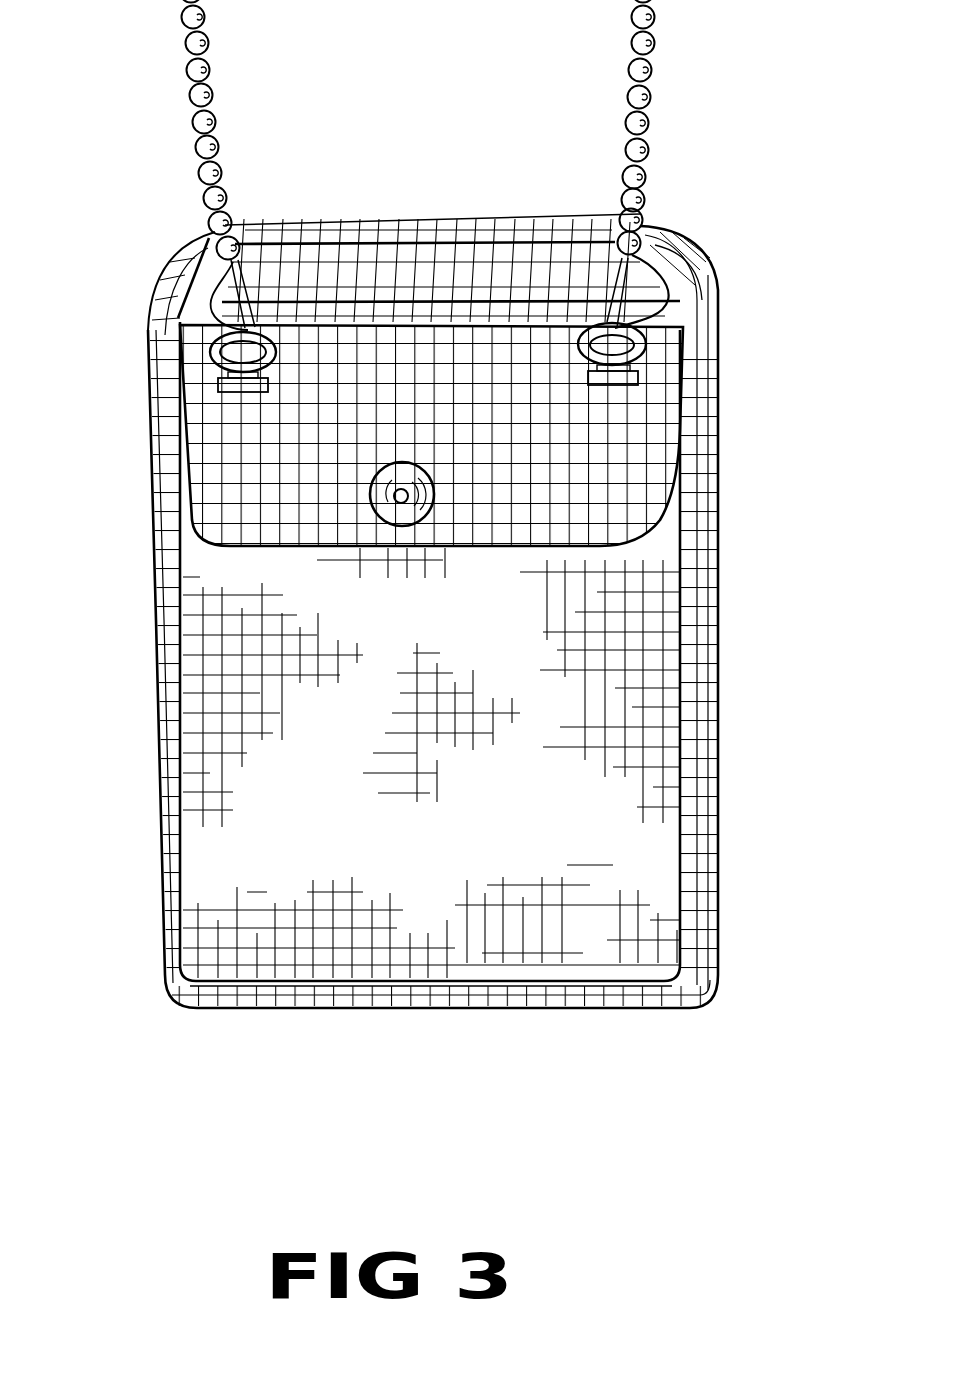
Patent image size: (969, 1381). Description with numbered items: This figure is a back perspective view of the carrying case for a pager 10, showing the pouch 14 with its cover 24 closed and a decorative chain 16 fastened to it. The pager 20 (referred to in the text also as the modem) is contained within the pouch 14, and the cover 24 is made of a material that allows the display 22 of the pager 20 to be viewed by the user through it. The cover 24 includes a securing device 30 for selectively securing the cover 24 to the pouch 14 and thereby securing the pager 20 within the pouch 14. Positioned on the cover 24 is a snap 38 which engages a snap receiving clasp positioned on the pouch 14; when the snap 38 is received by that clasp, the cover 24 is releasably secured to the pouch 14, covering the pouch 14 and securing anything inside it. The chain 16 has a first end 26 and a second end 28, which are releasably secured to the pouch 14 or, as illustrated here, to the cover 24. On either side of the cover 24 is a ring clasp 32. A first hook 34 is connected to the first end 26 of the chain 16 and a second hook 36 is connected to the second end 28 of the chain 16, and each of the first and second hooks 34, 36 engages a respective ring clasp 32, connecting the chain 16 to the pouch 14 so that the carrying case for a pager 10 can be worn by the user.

The carrying case for a pager 10 is at (130, 276).
The pouch 14 is at (164, 772).
The chain 16 is at (648, 36).
The pager 20 is at (181, 587).
The display 22 is at (551, 245).
The cover 24 is at (312, 220).
The first end of the chain 26 is at (660, 240).
The second end of the chain 28 is at (235, 265).
The securing device 30 is at (445, 493).
The ring clasp 32 is at (208, 343).
The first hook 34 is at (700, 300).
The second hook 36 is at (215, 322).
The snap 38 is at (393, 495).